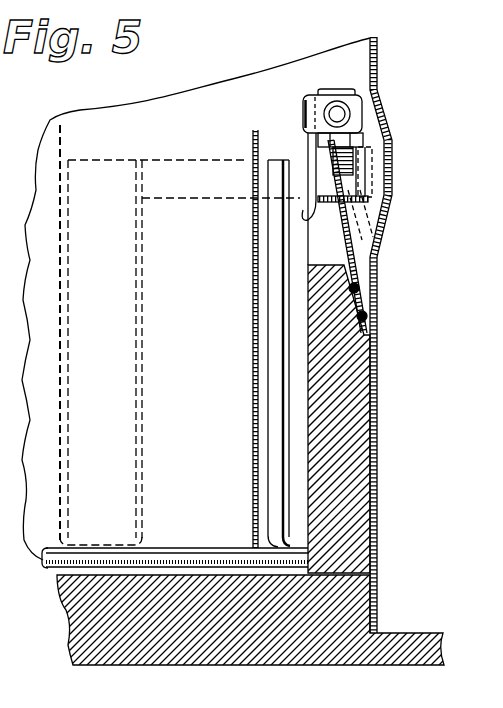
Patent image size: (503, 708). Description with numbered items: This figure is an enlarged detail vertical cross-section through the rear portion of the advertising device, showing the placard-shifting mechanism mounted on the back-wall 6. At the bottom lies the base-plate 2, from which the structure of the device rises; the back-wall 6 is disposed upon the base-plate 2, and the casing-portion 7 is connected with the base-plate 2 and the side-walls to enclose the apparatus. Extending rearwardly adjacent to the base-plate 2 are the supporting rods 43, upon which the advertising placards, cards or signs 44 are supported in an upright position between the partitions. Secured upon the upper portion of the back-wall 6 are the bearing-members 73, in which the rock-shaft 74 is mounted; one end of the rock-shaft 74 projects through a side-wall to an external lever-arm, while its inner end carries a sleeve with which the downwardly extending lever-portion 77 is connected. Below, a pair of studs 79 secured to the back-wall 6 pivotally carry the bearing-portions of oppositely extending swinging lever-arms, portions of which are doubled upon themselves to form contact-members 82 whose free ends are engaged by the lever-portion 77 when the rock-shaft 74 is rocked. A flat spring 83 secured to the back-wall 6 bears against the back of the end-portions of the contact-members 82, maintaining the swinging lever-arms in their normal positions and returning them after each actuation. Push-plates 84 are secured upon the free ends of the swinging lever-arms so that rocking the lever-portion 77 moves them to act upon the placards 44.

The base-plate 2 is at (328, 615).
The back-wall 6 is at (350, 423).
The casing-portion 7 is at (377, 372).
The supporting rods 43 is at (196, 555).
The advertising placards, cards or signs 44 is at (253, 322).
The bearing-members 73 is at (358, 93).
The rock-shaft 74 is at (342, 112).
The lever-portion 77 is at (312, 178).
The studs 79 is at (355, 147).
The contact-members 82 is at (343, 172).
The flat spring 83 is at (308, 230).
The push-plates 84 is at (282, 360).